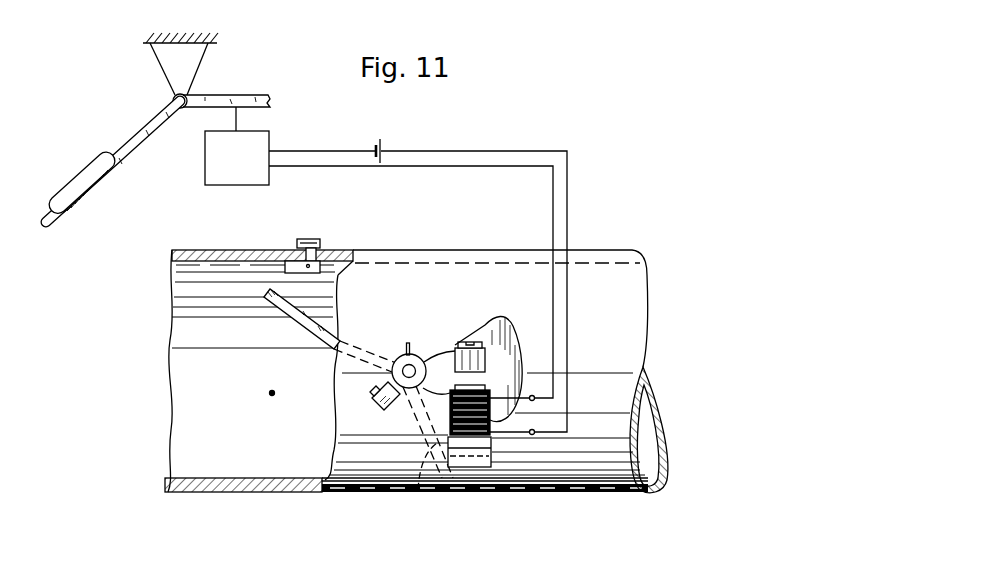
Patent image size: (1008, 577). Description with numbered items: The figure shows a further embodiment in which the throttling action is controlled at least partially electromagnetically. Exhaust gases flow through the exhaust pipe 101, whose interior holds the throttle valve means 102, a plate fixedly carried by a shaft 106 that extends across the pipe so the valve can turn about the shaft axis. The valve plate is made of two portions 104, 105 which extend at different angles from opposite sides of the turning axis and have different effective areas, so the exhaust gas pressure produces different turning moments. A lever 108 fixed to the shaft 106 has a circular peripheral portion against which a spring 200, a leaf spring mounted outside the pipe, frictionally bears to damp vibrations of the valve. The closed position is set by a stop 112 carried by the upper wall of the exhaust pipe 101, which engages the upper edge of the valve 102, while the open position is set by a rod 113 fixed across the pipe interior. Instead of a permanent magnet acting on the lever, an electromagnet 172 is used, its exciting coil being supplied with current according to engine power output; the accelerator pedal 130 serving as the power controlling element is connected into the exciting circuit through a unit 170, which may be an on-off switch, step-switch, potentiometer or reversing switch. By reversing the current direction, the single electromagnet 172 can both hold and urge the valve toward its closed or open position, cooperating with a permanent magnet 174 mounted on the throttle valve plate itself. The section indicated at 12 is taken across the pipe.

The accelerator pedal 130 is at (143, 116).
The switch unit 170 is at (205, 155).
The exhaust pipe 101 is at (238, 249).
The section line XII-XII 12 is at (228, 222).
The stop 112 is at (273, 249).
The throttle valve means 102 is at (345, 389).
The throttle valve plate portion 104 is at (273, 311).
The rod 113 is at (270, 395).
The spring 200 is at (397, 358).
The shaft 106 is at (430, 360).
The permanent magnet 174 is at (450, 348).
The lever 108 is at (499, 328).
The electromagnet 172 is at (451, 417).
The throttle valve plate portion 105 is at (419, 481).